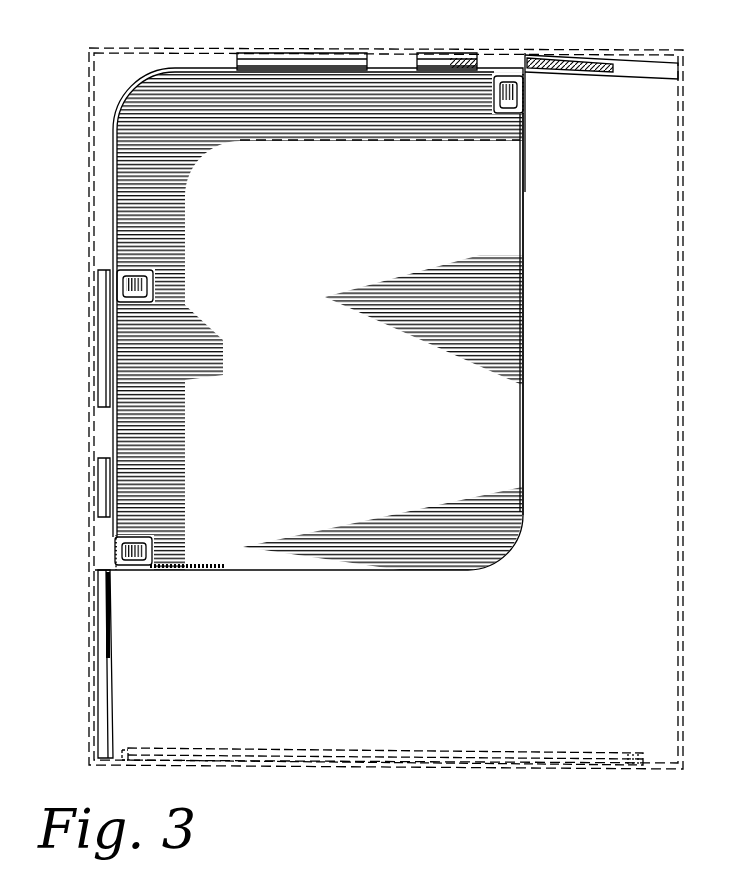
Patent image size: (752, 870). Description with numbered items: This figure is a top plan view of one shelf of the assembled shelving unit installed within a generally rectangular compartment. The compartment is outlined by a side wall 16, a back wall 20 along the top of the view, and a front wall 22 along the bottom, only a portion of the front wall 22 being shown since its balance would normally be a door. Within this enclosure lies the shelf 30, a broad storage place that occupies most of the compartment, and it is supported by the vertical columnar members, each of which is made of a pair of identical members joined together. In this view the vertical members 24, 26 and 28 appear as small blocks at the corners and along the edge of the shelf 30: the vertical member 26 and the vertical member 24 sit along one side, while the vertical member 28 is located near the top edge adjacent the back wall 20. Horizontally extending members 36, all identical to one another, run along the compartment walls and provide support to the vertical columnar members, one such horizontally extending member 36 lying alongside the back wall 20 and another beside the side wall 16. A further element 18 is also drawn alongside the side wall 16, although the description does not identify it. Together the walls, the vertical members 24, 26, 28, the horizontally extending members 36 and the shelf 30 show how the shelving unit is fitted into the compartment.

The side walls 16 is at (677, 472).
The side support bar 18 is at (88, 665).
The back wall 20 is at (604, 62).
The front wall 22 is at (660, 768).
The vertical member 24 is at (143, 561).
The vertical member 26 is at (127, 291).
The vertical member 28 is at (500, 82).
The shelf 30 is at (369, 223).
The horizontally extending member 36 is at (632, 76).